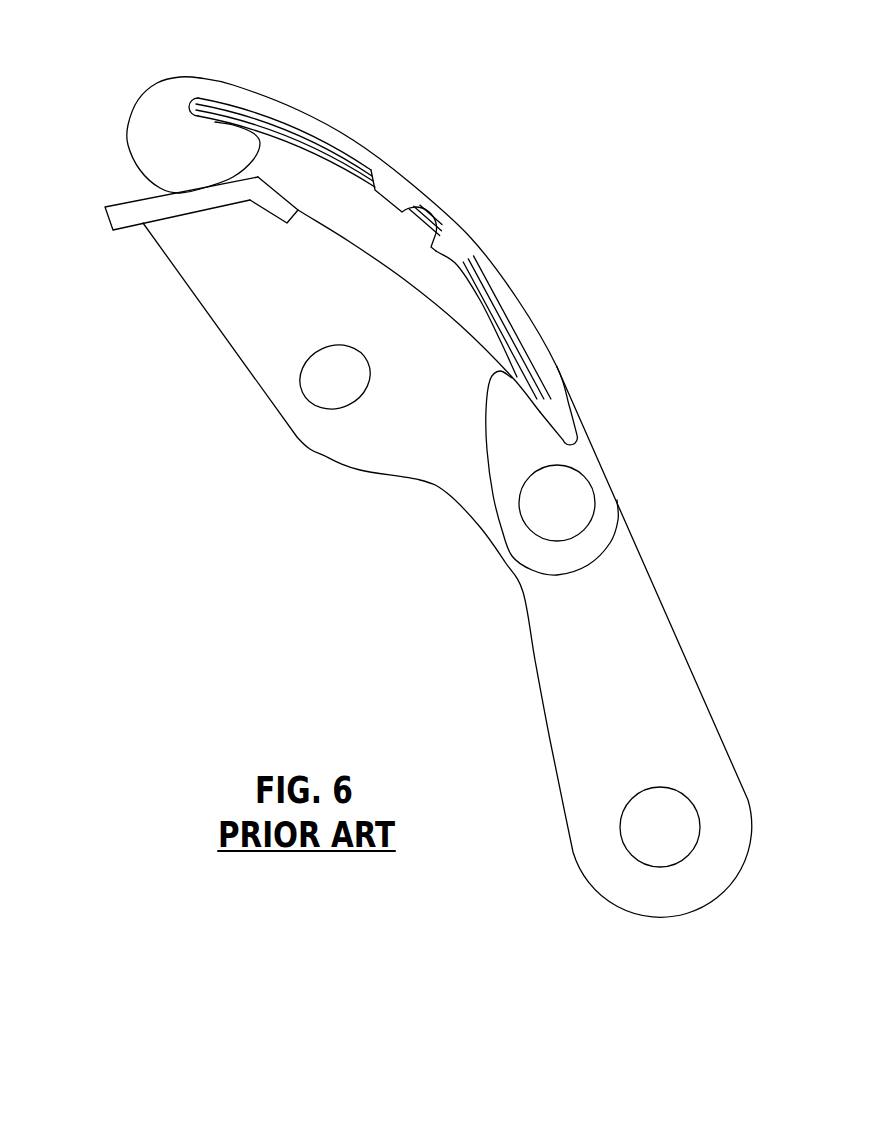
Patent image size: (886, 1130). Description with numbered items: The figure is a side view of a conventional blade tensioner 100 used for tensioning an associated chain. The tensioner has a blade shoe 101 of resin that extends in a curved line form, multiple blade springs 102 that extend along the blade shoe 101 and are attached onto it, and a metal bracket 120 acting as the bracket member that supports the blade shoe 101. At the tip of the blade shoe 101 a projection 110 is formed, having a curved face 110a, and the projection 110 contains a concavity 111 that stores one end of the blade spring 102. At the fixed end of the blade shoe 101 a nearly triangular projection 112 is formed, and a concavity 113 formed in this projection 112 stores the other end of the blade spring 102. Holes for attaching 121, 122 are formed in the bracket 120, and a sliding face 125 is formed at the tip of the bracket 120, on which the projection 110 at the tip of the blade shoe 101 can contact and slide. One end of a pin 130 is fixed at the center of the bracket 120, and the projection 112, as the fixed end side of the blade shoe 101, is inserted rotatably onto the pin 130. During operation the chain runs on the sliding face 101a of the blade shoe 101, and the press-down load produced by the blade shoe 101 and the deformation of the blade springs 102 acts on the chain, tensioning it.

The blade tensioner 100 is at (602, 247).
The blade shoe 101 is at (408, 178).
The sliding face 101a is at (483, 247).
The blade springs 102 is at (500, 315).
The projection 110 is at (138, 122).
The curved face 110a is at (240, 176).
The concavity 111 is at (237, 128).
The projection 112 is at (493, 405).
The concavity 113 is at (567, 428).
The bracket 120 is at (690, 652).
The hole for attaching 121 is at (686, 856).
The hole for attaching 122 is at (318, 400).
The sliding face 125 is at (122, 204).
The pin 130 is at (577, 500).